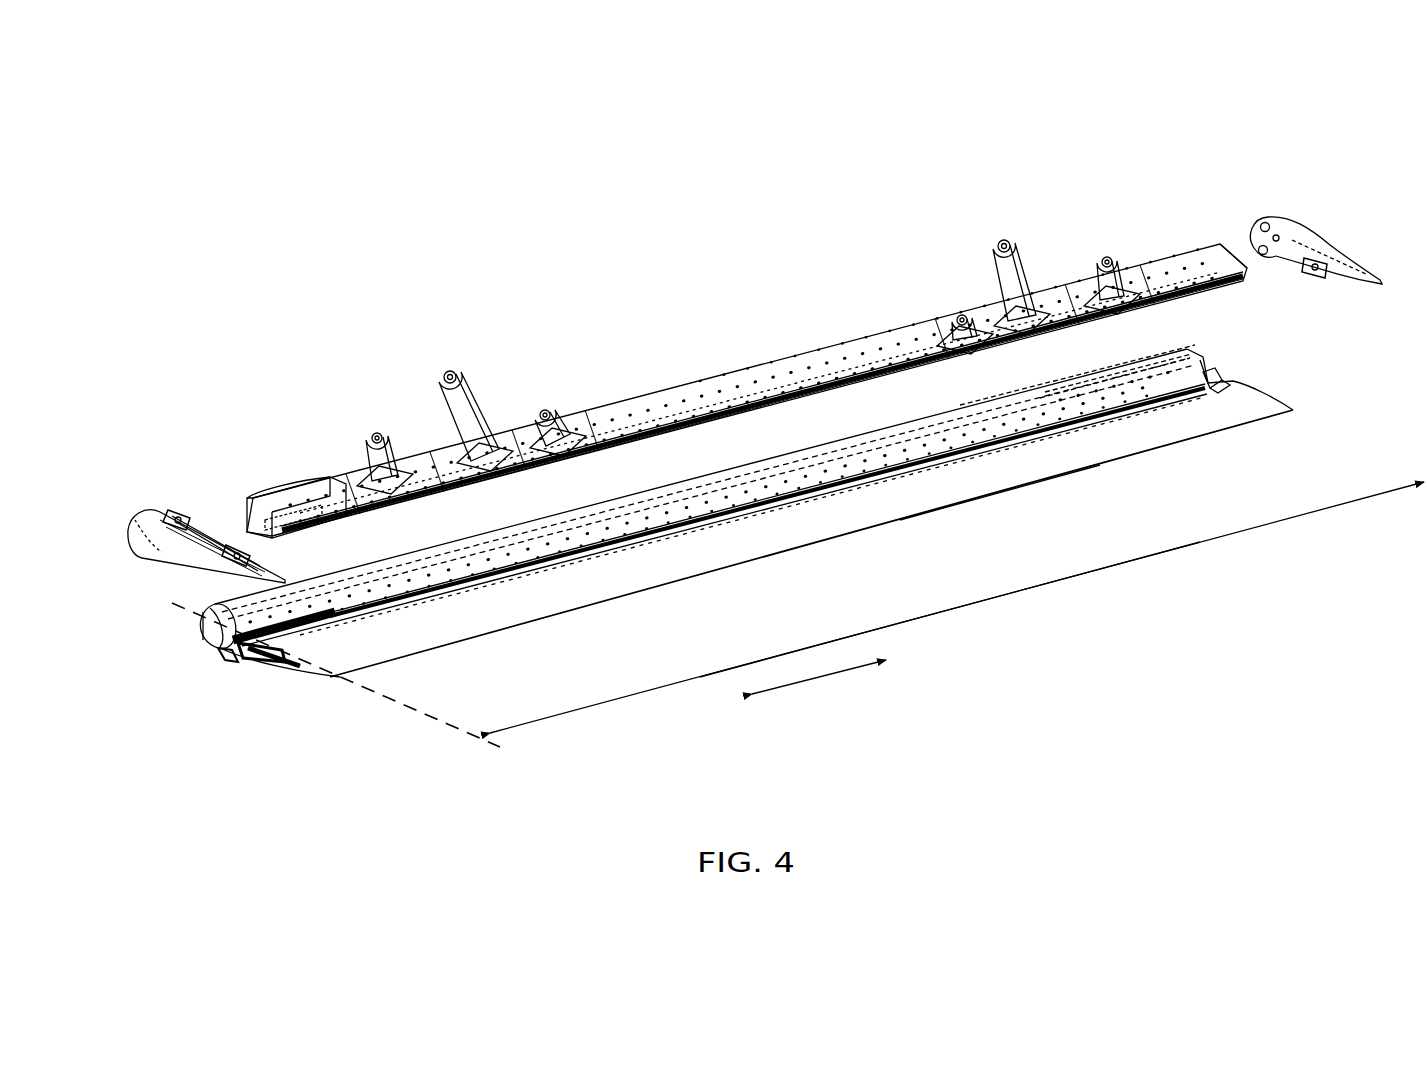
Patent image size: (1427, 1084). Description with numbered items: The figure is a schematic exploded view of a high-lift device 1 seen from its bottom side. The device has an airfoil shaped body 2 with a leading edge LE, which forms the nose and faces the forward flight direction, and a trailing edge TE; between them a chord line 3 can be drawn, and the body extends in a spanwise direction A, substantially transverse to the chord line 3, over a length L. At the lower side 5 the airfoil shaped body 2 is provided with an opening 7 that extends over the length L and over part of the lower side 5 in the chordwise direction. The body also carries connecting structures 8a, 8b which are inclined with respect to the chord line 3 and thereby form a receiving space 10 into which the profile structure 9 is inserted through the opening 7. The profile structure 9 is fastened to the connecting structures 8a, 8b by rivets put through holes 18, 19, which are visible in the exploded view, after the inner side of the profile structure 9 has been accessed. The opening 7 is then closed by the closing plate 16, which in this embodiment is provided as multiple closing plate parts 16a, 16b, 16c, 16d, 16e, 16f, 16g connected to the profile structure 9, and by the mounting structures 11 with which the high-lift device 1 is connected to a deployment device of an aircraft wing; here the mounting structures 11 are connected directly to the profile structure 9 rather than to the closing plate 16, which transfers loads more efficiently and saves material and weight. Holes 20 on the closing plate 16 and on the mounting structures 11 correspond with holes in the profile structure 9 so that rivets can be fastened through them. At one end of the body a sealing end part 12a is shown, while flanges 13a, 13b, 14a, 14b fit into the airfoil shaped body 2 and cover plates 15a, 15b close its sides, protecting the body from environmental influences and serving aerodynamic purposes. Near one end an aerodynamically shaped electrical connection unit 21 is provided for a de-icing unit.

The high-lift device 1 is at (563, 738).
The airfoil shaped body 2 is at (815, 525).
The chord line 3 is at (410, 715).
The lower side 5 is at (398, 634).
The opening 7 is at (1232, 380).
The connecting structure 8a is at (225, 640).
The connecting structure 8b is at (268, 656).
The profile structure 9 is at (297, 606).
The receiving space 10 is at (1140, 390).
The mounting structures 11 is at (455, 372).
The sealing end part 12a is at (155, 556).
The flange 13a is at (180, 512).
The flange 13b is at (1258, 222).
The flange 14a is at (240, 546).
The flange 14b is at (1318, 272).
The cover plate 15a is at (206, 522).
The cover plate 15b is at (1306, 230).
The closing plate 16 is at (681, 397).
The closing plate part 16a is at (356, 487).
The closing plate part 16b is at (428, 467).
The closing plate part 16c is at (508, 447).
The closing plate part 16d is at (613, 413).
The closing plate part 16e is at (988, 318).
The closing plate part 16f is at (1068, 297).
The closing plate part 16g is at (1178, 270).
The holes 18 is at (606, 528).
The holes 19 is at (376, 512).
The holes 20 is at (784, 362).
The electrical connection unit 21 is at (303, 492).
The leading edge LE is at (202, 625).
The trailing edge TE is at (946, 511).
The length L is at (958, 613).
The spanwise direction A is at (812, 681).